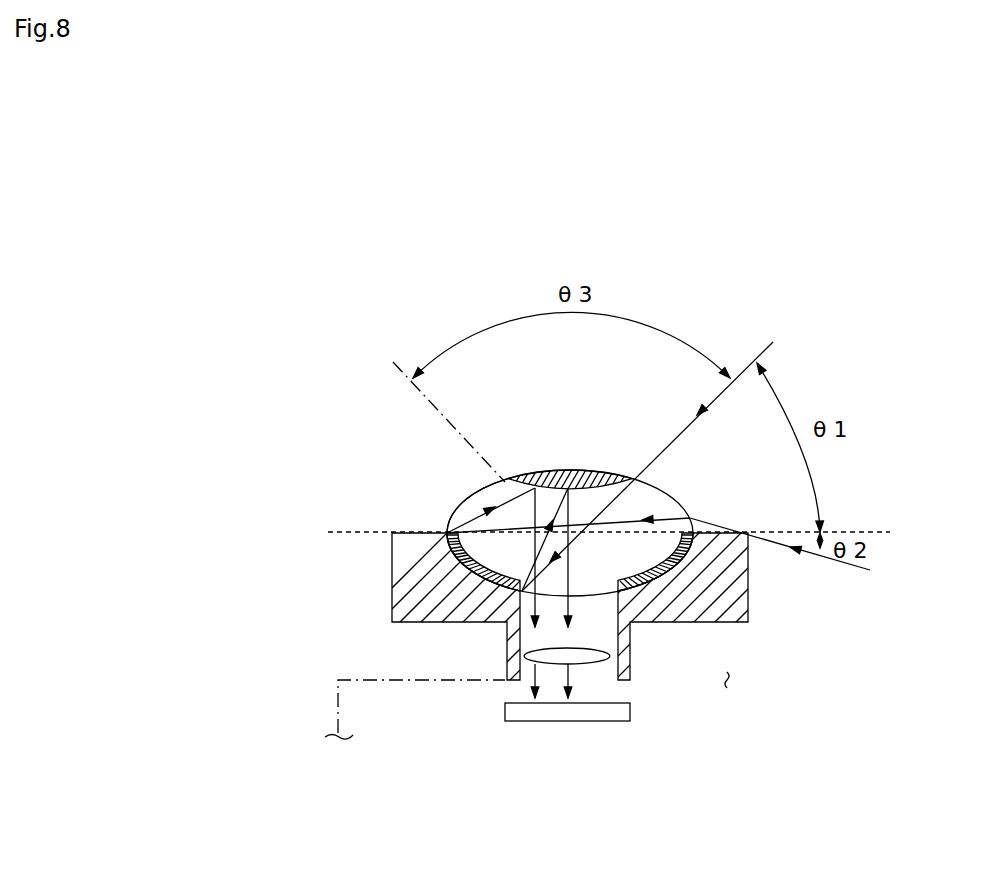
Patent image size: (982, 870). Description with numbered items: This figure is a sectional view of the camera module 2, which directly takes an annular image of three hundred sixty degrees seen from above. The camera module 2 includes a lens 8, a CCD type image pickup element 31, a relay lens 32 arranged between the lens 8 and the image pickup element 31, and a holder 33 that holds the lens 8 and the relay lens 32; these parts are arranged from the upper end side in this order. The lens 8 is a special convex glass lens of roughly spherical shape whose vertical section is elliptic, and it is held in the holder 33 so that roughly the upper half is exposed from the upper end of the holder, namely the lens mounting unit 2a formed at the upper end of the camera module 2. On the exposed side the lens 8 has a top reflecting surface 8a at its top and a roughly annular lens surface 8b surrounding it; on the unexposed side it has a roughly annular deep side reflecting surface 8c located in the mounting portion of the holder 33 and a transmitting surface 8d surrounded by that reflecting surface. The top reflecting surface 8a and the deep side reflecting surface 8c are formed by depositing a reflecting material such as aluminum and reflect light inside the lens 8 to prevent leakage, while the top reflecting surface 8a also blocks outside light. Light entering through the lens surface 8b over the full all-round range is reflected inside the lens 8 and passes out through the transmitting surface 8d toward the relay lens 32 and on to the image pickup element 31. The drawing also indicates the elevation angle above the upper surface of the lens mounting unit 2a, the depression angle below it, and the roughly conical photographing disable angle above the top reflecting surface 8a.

The camera module 2 is at (347, 637).
The lens mounting unit 2a is at (420, 530).
The lens 8 is at (465, 505).
The top reflecting surface 8a is at (577, 470).
The lens surface 8b is at (487, 486).
The deep side reflecting surface 8c is at (471, 560).
The transmitting surface 8d is at (588, 597).
The image pickup element 31 is at (517, 708).
The relay lens 32 is at (582, 657).
The holder 33 is at (730, 610).